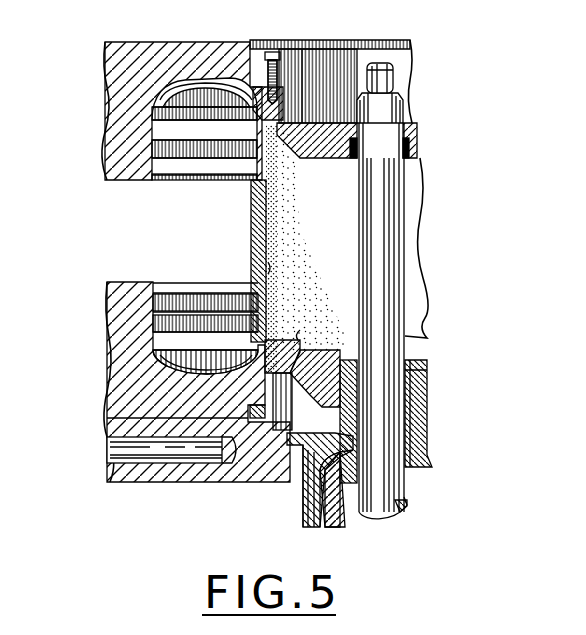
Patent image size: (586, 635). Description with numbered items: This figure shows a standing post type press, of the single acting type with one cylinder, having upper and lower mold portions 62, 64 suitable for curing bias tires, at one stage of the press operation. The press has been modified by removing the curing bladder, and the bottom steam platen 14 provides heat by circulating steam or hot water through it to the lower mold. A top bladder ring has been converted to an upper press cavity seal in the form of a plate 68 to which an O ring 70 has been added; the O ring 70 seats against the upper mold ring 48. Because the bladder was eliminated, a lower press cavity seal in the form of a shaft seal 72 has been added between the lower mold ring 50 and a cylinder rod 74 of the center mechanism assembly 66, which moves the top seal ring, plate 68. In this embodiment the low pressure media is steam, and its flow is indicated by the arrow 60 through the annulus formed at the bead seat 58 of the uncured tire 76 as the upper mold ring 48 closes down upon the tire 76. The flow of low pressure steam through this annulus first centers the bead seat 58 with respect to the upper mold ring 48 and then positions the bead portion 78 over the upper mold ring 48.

The bottom steam platen 14 is at (120, 445).
The upper mold ring 48 is at (288, 82).
The lower mold ring 50 is at (305, 330).
The bead seat 58 is at (231, 173).
The arrow 60 is at (283, 136).
The upper mold portion 62 is at (110, 100).
The lower mold portion 64 is at (118, 344).
The center mechanism assembly 66 is at (452, 94).
The plate 68 is at (418, 128).
The O ring 70 is at (306, 120).
The shaft seal 72 is at (413, 383).
The cylinder rod 74 is at (392, 203).
The uncured tire 76 is at (246, 232).
The bead portion 78 is at (273, 272).